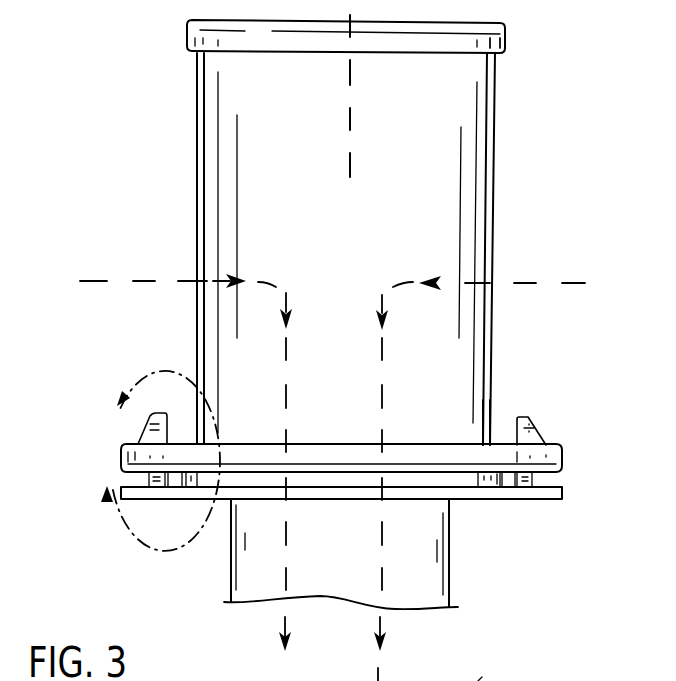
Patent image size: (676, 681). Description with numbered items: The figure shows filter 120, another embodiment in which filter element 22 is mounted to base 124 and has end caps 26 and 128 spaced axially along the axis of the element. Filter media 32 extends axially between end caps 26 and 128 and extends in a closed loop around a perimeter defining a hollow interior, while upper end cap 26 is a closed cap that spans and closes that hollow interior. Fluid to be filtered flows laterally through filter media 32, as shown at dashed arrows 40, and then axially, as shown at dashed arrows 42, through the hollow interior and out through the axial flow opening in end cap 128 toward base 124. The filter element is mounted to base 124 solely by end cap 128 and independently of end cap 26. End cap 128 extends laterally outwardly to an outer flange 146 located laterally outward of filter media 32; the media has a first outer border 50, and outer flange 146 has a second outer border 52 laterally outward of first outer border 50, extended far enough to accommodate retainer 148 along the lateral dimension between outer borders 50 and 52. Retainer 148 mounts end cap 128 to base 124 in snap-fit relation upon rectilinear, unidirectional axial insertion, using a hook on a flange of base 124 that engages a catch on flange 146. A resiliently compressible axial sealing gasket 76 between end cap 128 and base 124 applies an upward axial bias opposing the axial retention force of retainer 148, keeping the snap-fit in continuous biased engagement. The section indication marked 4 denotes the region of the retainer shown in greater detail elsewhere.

The filter 120 is at (130, 179).
The first outer border 50 is at (198, 63).
The end cap 26 is at (505, 42).
The filter element 22 is at (234, 100).
The end cap 128 is at (501, 443).
The dashed arrows 40 is at (134, 281).
The second outer border 52 is at (120, 453).
The retainer 148 is at (152, 413).
The outer flange 146 is at (560, 457).
The axial sealing gasket 76 is at (535, 480).
The base 124 is at (451, 570).
The dashed arrows 42 is at (284, 617).
The filter media 32 is at (482, 677).
The section view indicator 4 is at (160, 460).